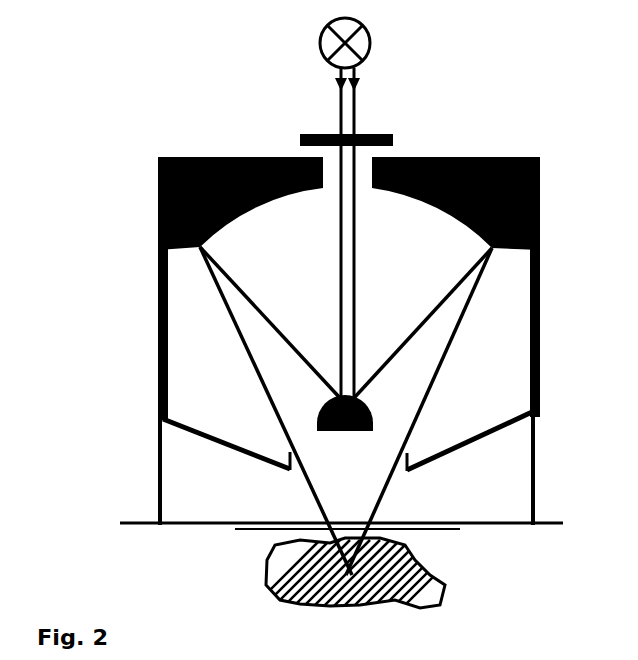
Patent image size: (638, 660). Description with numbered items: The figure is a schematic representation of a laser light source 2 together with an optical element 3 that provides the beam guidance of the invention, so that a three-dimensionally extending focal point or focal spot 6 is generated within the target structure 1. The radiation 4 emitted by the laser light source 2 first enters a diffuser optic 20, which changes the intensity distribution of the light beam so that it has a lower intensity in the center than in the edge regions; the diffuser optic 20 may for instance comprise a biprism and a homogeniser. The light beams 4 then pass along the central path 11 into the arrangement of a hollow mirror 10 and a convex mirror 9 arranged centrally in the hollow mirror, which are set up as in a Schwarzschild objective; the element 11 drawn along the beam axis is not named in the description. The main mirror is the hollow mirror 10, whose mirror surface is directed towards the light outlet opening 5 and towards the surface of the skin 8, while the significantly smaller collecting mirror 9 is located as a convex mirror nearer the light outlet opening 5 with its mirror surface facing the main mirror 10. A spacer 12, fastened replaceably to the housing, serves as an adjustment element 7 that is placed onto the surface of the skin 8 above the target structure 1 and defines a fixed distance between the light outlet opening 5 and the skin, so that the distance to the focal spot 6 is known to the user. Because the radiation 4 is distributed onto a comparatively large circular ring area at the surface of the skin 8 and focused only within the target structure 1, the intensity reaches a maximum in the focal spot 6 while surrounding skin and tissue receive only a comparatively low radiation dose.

The target structure 1 is at (405, 572).
The laser light source 2 is at (360, 43).
The optical element 3 is at (122, 291).
The radiation 4 is at (358, 360).
The light outlet opening 5 is at (343, 478).
The focal spot 6 is at (348, 565).
The adjustment element 7 is at (140, 476).
The surface of the skin 8 is at (125, 522).
The convex mirror 9 is at (318, 410).
The hollow mirror 10 is at (448, 202).
The light guide rod 11 is at (362, 160).
The spacer 12 is at (157, 450).
The diffuser optic 20 is at (300, 138).